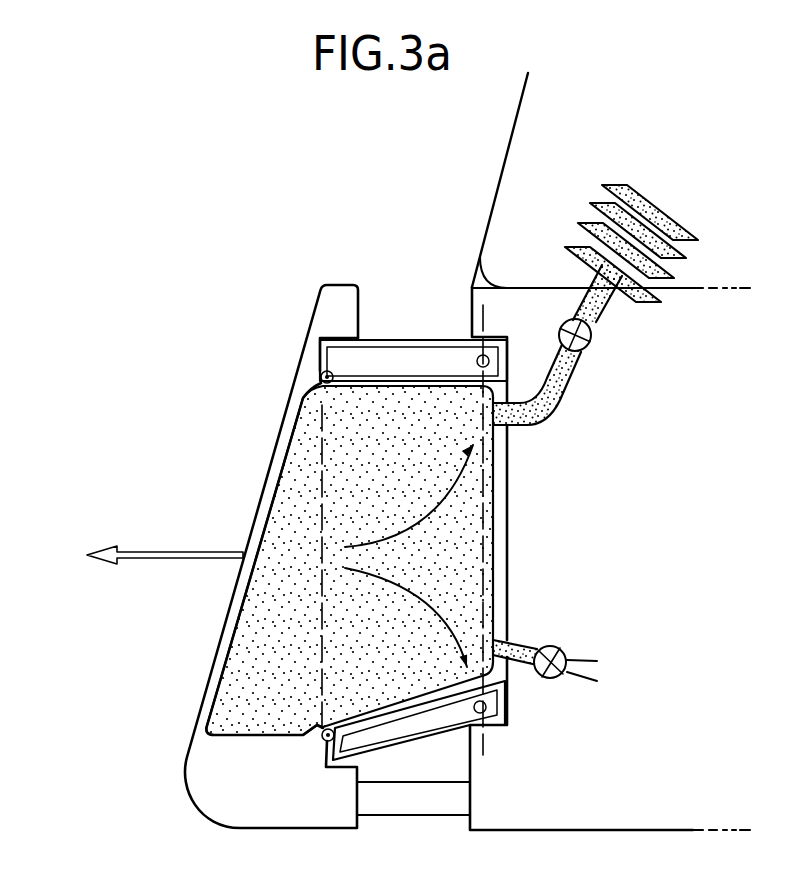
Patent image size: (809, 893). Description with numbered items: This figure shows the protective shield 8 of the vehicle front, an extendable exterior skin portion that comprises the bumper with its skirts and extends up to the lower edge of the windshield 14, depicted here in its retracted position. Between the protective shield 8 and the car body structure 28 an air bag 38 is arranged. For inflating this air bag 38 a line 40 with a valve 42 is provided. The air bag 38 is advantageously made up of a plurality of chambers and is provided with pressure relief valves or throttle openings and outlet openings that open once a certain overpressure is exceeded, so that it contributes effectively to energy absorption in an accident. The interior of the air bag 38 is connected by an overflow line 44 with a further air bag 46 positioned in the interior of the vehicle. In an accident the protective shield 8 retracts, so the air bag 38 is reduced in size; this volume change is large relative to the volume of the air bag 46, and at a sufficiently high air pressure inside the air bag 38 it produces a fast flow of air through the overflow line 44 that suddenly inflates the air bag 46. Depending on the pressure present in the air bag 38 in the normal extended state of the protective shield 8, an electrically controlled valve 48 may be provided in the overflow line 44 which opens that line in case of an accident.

The protective shield 8 is at (187, 770).
The windshield 14 is at (497, 178).
The car body structure 28 is at (510, 530).
The air bag 38 is at (297, 492).
The line 40 is at (532, 645).
The valve 42 is at (557, 678).
The overflow line 44 is at (553, 395).
The air bag 46 is at (682, 215).
The electrically controlled valve 48 is at (591, 340).